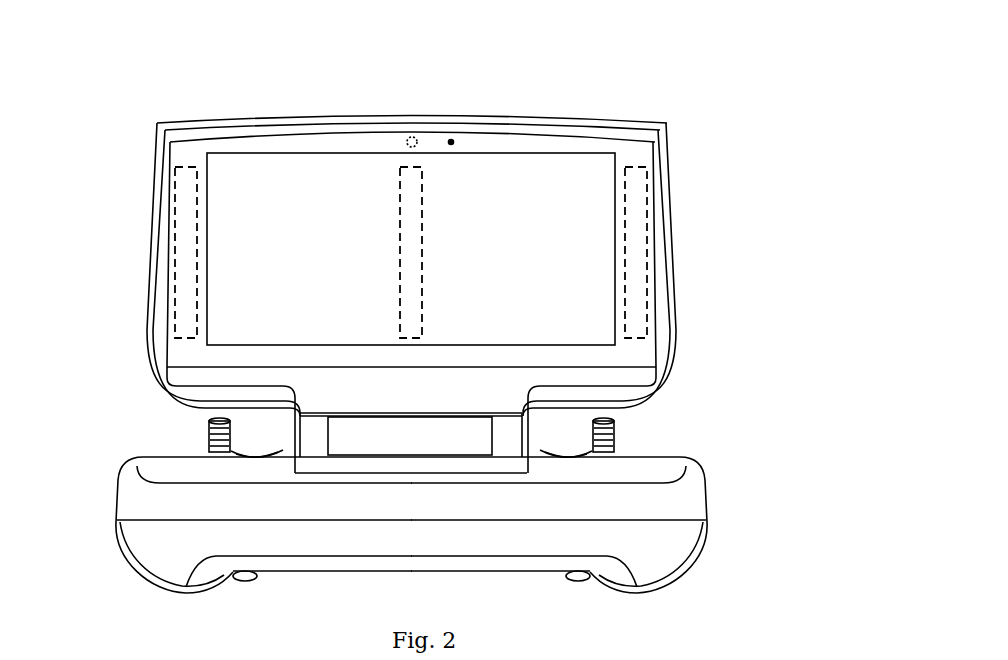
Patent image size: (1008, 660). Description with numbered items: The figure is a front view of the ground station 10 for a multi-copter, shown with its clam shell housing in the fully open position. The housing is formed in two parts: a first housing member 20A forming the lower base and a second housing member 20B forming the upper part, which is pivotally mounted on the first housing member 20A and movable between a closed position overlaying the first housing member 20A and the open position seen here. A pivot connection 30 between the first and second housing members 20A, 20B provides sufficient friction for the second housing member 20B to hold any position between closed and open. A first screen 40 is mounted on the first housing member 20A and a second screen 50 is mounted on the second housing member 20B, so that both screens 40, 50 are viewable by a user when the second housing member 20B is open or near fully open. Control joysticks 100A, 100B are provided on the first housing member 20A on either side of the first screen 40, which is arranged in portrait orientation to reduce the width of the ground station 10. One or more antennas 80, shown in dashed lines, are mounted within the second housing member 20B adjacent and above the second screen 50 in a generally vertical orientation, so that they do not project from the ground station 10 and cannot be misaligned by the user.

The ground station 10 is at (692, 112).
The first housing member 20A is at (702, 487).
The second housing member 20B is at (676, 311).
The pivot connection 30 is at (508, 435).
The first screen 40 is at (385, 465).
The second screen 50 is at (300, 197).
The antennas 80 is at (194, 243).
The control joystick 100A is at (208, 441).
The control joystick 100B is at (614, 432).